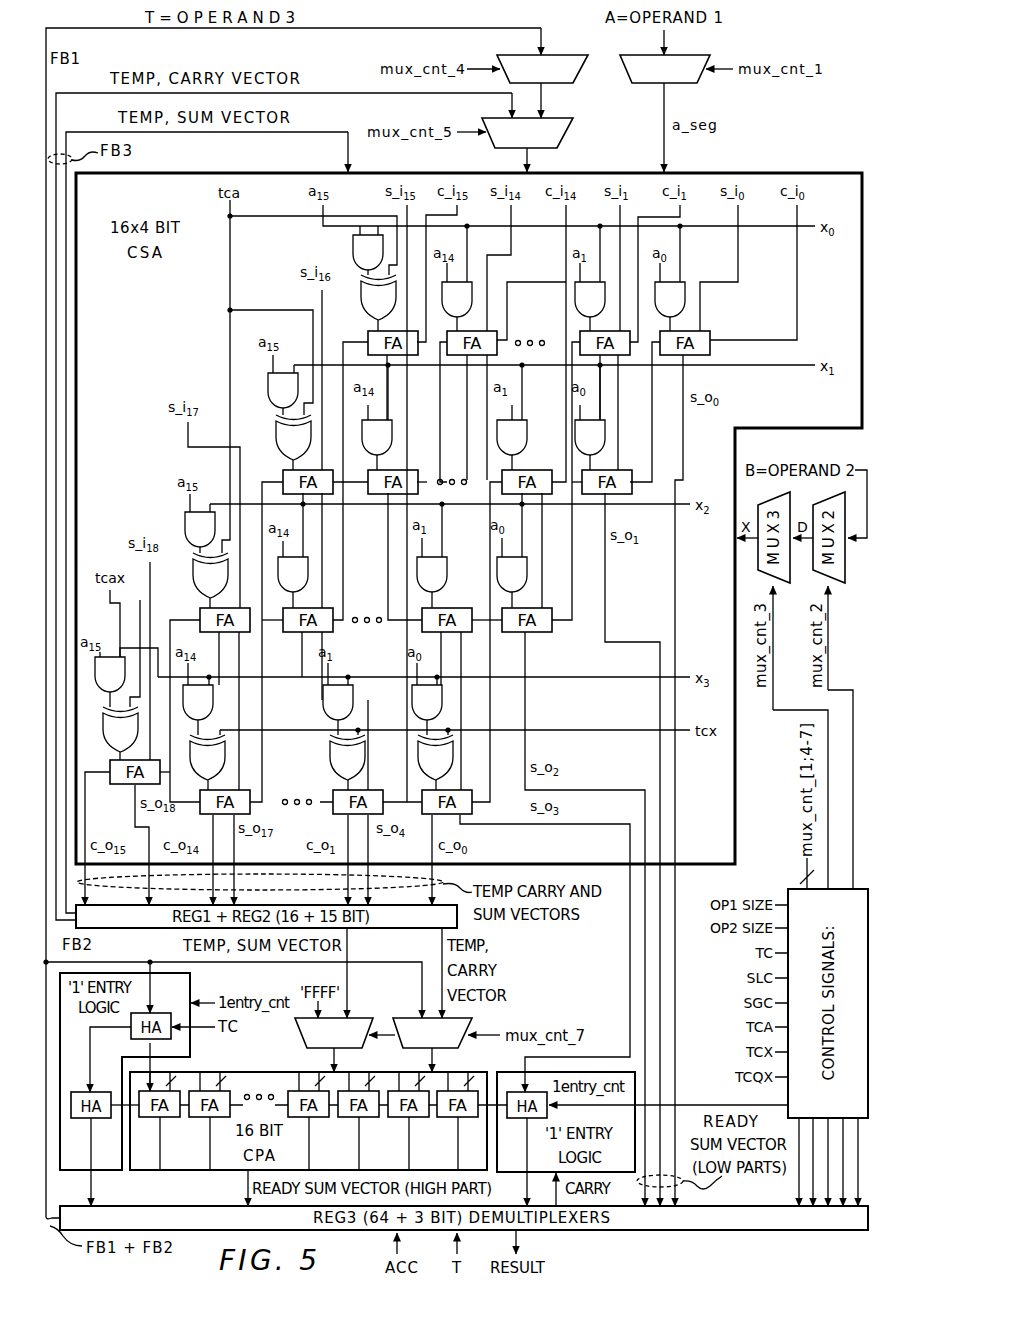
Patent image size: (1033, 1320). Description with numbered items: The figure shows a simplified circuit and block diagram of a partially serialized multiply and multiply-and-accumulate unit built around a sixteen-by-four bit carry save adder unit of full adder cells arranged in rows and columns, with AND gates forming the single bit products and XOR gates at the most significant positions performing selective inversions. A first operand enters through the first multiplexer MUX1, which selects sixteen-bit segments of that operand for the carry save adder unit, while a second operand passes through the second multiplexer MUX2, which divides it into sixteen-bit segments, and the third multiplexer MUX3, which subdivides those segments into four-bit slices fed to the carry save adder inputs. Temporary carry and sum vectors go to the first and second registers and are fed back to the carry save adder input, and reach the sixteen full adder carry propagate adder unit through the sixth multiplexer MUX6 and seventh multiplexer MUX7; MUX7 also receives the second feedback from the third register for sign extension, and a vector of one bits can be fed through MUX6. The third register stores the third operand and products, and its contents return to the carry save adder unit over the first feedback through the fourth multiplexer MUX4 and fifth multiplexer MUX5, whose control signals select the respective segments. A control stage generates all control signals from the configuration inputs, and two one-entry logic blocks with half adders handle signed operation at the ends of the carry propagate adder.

The first multiplexer MUX1 is at (665, 69).
The second multiplexer MUX2 is at (829, 537).
The third multiplexer MUX3 is at (774, 537).
The fourth multiplexer MUX4 is at (542, 69).
The fifth multiplexer MUX5 is at (527, 133).
The sixth multiplexer MUX6 is at (334, 1033).
The seventh multiplexer MUX7 is at (432, 1033).